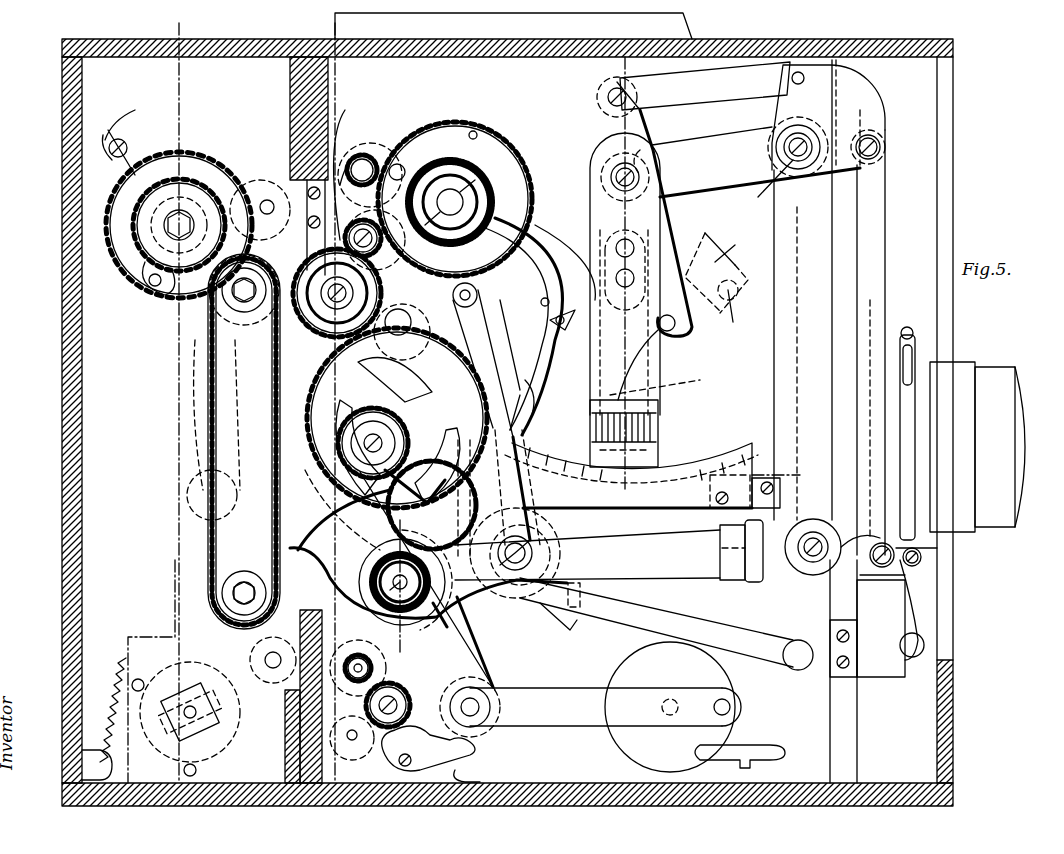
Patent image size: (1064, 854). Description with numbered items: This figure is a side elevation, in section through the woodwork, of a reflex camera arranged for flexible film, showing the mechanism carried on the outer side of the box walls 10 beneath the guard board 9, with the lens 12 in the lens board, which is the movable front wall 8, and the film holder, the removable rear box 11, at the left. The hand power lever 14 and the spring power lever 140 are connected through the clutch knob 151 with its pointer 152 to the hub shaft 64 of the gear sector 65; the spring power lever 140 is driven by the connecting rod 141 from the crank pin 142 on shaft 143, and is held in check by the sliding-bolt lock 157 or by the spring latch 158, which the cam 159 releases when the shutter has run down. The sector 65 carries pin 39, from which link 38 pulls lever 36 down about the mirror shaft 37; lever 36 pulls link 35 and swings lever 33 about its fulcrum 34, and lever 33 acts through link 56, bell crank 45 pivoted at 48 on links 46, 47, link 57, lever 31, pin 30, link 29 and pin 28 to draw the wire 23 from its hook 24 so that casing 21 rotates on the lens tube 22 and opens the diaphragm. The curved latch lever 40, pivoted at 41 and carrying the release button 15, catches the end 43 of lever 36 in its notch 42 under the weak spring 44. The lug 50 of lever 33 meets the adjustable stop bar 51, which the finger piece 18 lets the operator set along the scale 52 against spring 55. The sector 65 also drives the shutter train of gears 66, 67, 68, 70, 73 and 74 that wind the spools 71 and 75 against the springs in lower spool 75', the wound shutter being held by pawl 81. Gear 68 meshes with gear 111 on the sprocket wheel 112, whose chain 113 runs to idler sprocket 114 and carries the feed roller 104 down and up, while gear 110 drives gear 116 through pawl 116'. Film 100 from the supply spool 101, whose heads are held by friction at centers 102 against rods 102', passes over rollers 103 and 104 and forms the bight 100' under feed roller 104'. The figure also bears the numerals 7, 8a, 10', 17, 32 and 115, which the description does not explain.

The section line 7 is at (310, 32).
The movable front wall (lens board) 8 is at (625, 57).
The section line 8a is at (393, 520).
The guard board 9 is at (179, 23).
The camera box walls 10 is at (625, 88).
The plate 10' is at (977, 156).
The removable rear box (film holder) 11 is at (17, 332).
The lens 12 is at (1000, 520).
The hand power lever 14 is at (618, 565).
The release button 15 is at (785, 652).
The ratchet wheel 17 is at (450, 185).
The finger piece 18 is at (660, 428).
The casing 21 is at (904, 437).
The lens tube 22 is at (952, 447).
The flexible wire 23 is at (915, 330).
The hook 24 is at (912, 362).
The pin 28 is at (926, 648).
The short vertical link 29 is at (918, 603).
The pin 30 is at (925, 565).
The lever 31 is at (875, 570).
The pivot 32 is at (808, 572).
The lever 33 is at (645, 209).
The fulcrum 34 is at (620, 170).
The link 35 is at (598, 245).
The lever 36 is at (491, 360).
The shaft 37 is at (405, 322).
The link 38 is at (514, 345).
The pin 39 is at (528, 550).
The long curved lever (latch) 40 is at (643, 617).
The pivot 41 is at (513, 440).
The notch and abutment 42 is at (528, 402).
The end of lever 36 43 is at (563, 311).
The weak spring 44 is at (514, 553).
The bell crank 45 is at (843, 110).
The link 46 is at (760, 168).
The link 47 is at (810, 305).
The pivot 48 is at (760, 186).
The projecting lug or pin 50 is at (676, 330).
The adjustable stop bar 51 is at (665, 375).
The scale 52 is at (680, 470).
The spring 55 is at (700, 395).
The link 56 is at (680, 95).
The link 57 is at (875, 272).
The hub shaft 64 is at (372, 565).
The gear sector 65 is at (344, 510).
The gear 66 is at (395, 430).
The gear 67 is at (440, 362).
The gear 68 is at (337, 310).
The gear 70 is at (345, 167).
The under shutter winding spool 71 is at (372, 175).
The gear 73 is at (412, 148).
The gear 74 is at (368, 160).
The upper shutter winding spool 75 is at (361, 126).
The lower shutter spool 75' is at (370, 722).
The pawl 81 is at (400, 290).
The flexible sensitive film 100 is at (210, 415).
The bight of film 100' is at (142, 445).
The spool 101 is at (174, 665).
The centers with friction provision 102 is at (161, 718).
The rods 102' is at (218, 773).
The roller 103 is at (250, 665).
The roller (feed roll) 104 is at (260, 186).
The feed roller 104' is at (171, 495).
The gear 110 is at (145, 222).
The gear 111 is at (210, 315).
The sprocket wheel 112 is at (225, 335).
The sprocket chain 113 is at (208, 368).
The idler sprocket 114 is at (212, 580).
The pawl 115 is at (128, 140).
The gear 116 is at (179, 217).
The pawl 116' is at (89, 278).
The spring power lever 140 is at (485, 655).
The connecting rod 141 is at (581, 707).
The crank pin 142 is at (735, 707).
The shaft 143 is at (672, 695).
The clutch knob 151 is at (372, 575).
The pointer 152 is at (450, 622).
The lock (sliding bolt) 157 is at (760, 748).
The spring latch 158 is at (470, 765).
The cam 159 is at (410, 688).